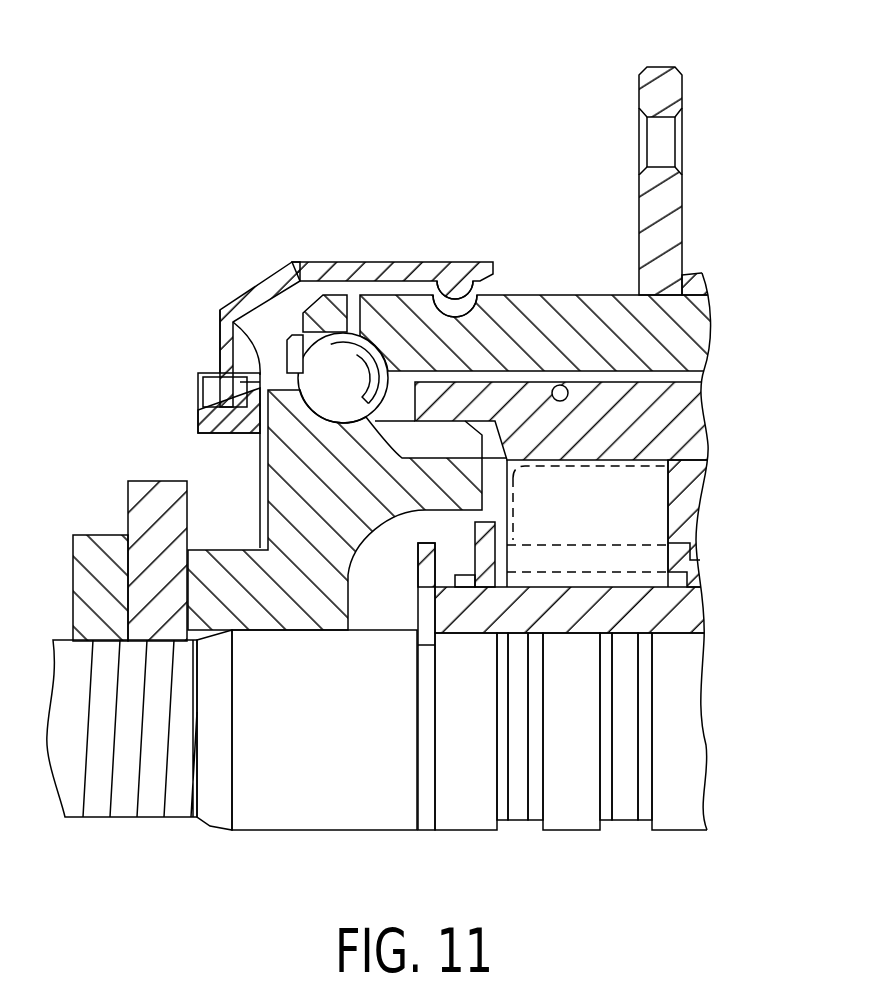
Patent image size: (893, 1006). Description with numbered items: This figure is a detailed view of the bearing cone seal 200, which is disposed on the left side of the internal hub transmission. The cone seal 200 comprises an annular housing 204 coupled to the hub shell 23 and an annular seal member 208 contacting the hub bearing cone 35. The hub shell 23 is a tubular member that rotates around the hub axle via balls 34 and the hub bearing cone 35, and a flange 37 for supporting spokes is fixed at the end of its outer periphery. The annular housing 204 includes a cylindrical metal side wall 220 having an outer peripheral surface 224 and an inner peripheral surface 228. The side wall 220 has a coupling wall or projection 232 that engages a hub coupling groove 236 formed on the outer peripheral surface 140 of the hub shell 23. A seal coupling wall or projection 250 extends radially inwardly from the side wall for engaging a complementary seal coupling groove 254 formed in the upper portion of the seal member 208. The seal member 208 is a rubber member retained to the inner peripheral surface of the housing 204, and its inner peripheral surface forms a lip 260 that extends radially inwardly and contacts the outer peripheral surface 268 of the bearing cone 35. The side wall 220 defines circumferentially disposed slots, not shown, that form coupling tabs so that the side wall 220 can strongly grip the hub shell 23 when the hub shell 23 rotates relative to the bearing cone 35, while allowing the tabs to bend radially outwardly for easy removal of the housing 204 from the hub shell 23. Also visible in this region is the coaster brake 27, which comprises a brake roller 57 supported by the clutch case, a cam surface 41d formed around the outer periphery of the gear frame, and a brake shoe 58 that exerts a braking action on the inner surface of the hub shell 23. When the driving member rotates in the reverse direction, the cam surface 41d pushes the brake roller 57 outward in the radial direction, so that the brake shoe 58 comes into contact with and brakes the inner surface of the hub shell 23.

The cone seal 200 is at (173, 210).
The flange 37 is at (668, 80).
The hub shell 23 is at (695, 285).
The coaster brake 27 is at (573, 565).
The brake shoe 58 is at (495, 390).
The outer peripheral surface 140 is at (536, 290).
The coupling wall or projection 232 is at (470, 278).
The hub coupling groove 236 is at (454, 330).
The outer peripheral surface 224 is at (392, 238).
The cylindrical metal side wall 220 is at (333, 365).
The annular housing 204 is at (243, 293).
The seal coupling groove 254 is at (252, 373).
The seal coupling wall or projection 250 is at (227, 332).
The seal member 208 is at (207, 385).
The hub bearing cone 35 is at (304, 510).
The lip 260 is at (267, 442).
The outer peripheral surface 268 is at (270, 485).
The inner peripheral surface 228 is at (337, 315).
The balls 34 is at (357, 352).
The brake roller 57 is at (560, 520).
The cam surface 41d is at (680, 573).